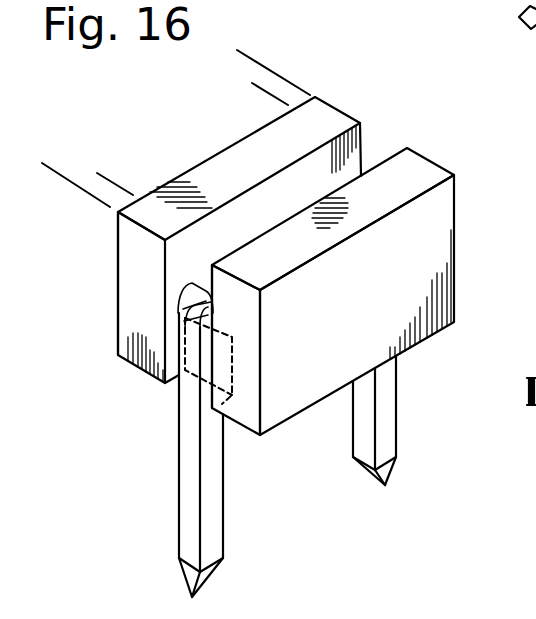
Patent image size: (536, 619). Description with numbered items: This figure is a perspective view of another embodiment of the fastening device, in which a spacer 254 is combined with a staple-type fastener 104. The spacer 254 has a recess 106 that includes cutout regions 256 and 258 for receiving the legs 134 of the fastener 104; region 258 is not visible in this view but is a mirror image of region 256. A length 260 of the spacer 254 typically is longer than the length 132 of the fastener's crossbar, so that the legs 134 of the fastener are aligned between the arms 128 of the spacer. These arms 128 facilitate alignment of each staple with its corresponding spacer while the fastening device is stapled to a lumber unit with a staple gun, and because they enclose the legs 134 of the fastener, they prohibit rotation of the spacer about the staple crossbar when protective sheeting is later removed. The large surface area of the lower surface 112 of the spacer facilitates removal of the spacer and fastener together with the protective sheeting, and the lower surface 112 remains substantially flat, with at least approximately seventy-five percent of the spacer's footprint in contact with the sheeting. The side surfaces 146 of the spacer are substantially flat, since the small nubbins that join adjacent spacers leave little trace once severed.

The fastener 104 is at (210, 548).
The recess 106 is at (356, 151).
The lower surface 112 is at (140, 370).
The arms 128 is at (130, 283).
The length of crossbar 132 is at (272, 93).
The legs 134 is at (187, 502).
The side surfaces 146 is at (428, 264).
The spacer 254 is at (427, 222).
The cutout region 256 is at (198, 395).
The cutout region 258 is at (380, 157).
The length of spacer 260 is at (249, 57).